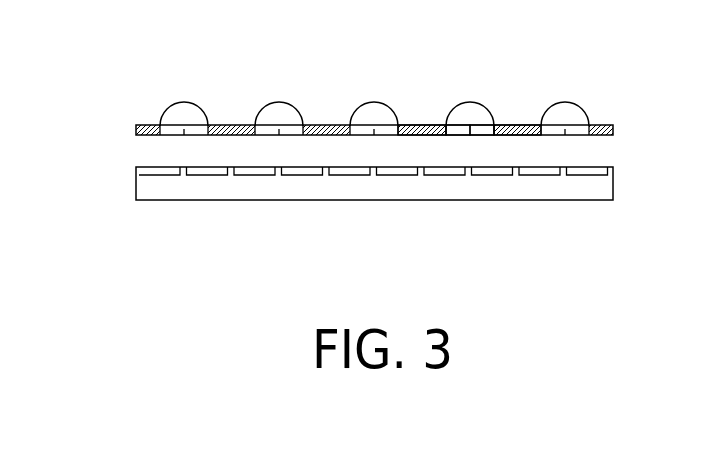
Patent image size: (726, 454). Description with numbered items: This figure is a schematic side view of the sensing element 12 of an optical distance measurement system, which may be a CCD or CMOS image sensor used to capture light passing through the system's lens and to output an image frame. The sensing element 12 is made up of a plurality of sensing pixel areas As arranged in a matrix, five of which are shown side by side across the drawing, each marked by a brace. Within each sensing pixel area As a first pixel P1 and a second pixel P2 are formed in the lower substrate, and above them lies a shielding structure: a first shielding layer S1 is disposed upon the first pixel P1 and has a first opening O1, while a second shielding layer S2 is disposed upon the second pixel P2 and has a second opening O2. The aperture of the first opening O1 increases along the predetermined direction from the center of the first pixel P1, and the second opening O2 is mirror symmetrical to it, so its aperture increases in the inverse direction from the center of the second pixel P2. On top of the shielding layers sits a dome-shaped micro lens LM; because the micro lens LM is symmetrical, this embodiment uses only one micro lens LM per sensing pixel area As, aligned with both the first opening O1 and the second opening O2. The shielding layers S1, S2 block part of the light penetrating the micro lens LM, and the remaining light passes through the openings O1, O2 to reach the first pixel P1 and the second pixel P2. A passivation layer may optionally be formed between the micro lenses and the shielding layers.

The sensing element 12 is at (336, 143).
The sensing pixel area As is at (232, 60).
The micro lens LM is at (488, 87).
The first shielding layer S1 is at (442, 128).
The second shielding layer S2 is at (500, 130).
The first opening O1 is at (457, 135).
The second opening O2 is at (482, 135).
The first pixel P1 is at (455, 171).
The second pixel P2 is at (500, 172).